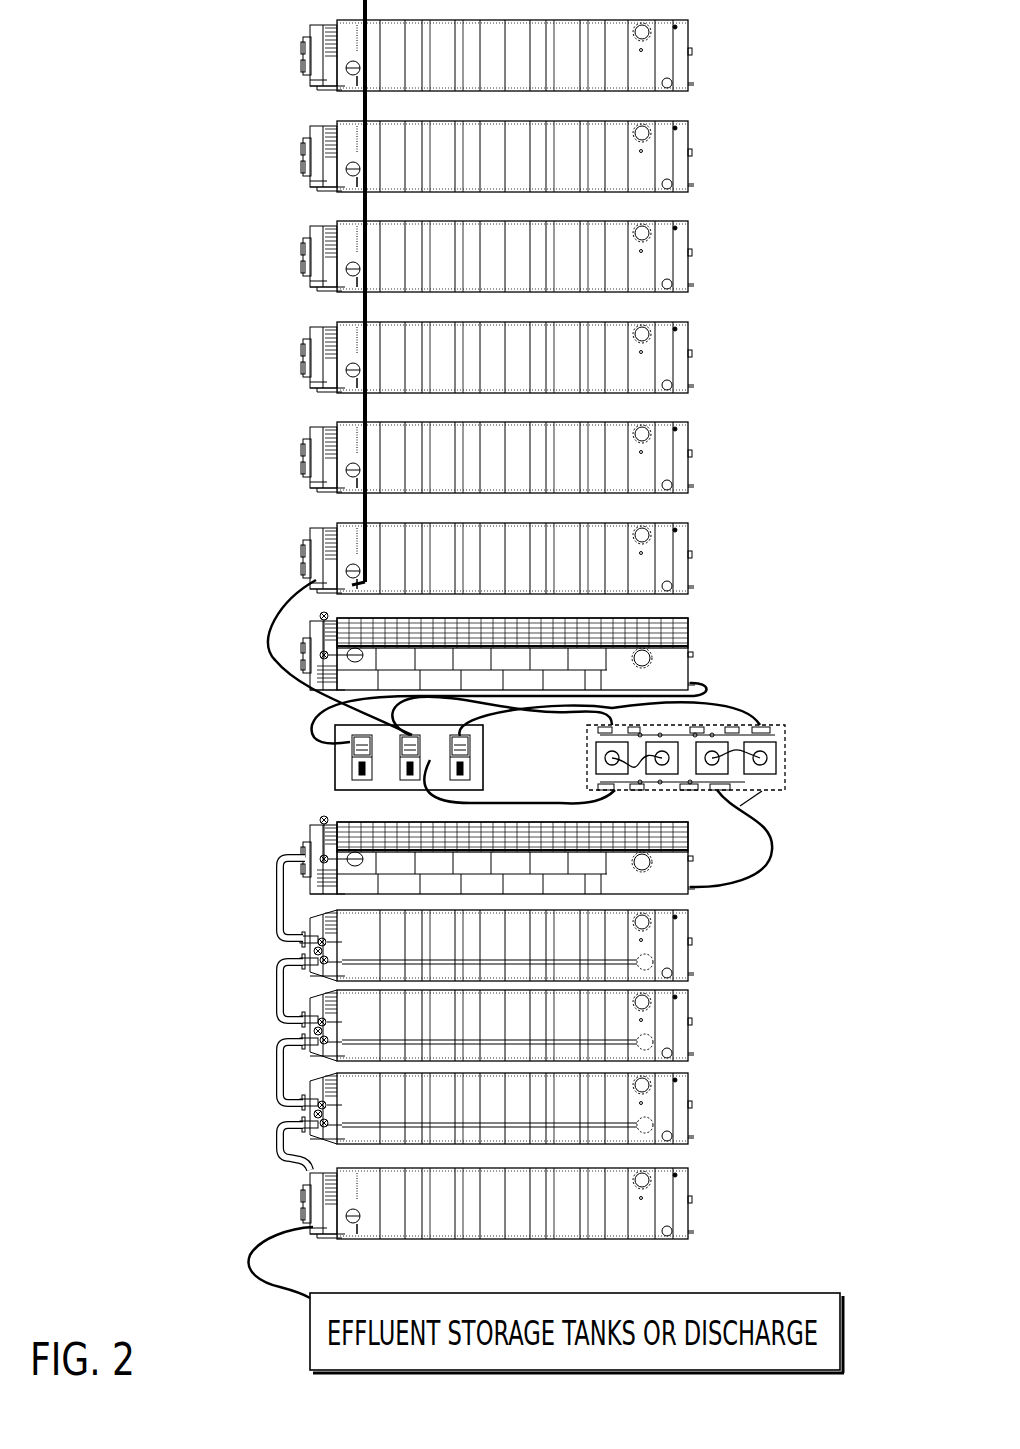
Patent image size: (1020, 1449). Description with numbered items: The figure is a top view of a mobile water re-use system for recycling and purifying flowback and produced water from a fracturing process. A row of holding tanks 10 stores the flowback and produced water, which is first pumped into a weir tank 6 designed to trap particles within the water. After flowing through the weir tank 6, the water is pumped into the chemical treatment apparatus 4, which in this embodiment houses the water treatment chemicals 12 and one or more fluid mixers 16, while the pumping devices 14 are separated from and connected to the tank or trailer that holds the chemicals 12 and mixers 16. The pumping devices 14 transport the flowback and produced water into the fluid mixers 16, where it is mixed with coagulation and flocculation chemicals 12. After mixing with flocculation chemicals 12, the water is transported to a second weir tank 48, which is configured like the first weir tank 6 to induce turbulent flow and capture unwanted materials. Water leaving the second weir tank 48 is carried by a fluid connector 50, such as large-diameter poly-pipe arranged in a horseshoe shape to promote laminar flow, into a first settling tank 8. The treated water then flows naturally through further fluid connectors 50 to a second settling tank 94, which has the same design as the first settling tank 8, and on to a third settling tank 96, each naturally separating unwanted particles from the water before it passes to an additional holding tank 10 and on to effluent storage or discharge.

The chemical treatment apparatus 4 is at (714, 752).
The weir tank 6 is at (690, 647).
The settling tank 8 is at (690, 930).
The holding tank 10 is at (688, 40).
The water treatment chemicals 12 is at (760, 758).
The pumping device 14 is at (353, 763).
The fluid mixer 16 is at (722, 727).
The second weir tank 48 is at (690, 856).
The fluid connector 50 is at (275, 900).
The second settling tank 94 is at (690, 1013).
The third settling tank 96 is at (690, 1097).